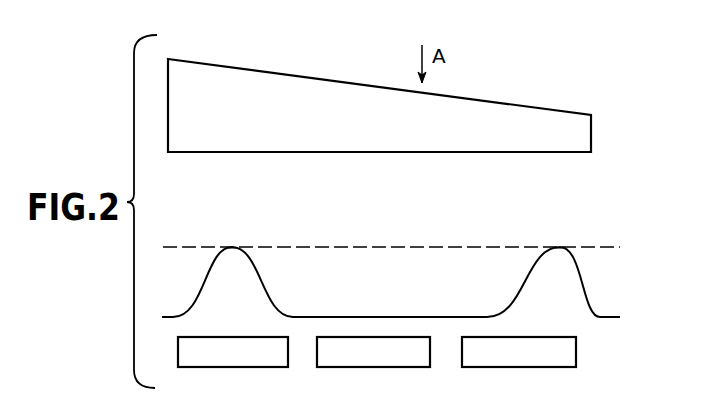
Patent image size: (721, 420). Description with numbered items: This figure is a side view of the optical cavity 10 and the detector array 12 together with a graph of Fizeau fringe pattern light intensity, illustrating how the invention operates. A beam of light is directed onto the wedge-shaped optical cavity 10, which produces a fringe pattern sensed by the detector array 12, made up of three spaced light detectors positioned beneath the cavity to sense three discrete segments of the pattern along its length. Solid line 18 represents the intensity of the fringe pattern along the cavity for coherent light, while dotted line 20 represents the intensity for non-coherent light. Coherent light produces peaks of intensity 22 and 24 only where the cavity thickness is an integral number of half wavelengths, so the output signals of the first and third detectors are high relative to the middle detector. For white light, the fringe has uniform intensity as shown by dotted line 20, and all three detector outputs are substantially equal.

The optical cavity 10 is at (580, 115).
The detector array 12 is at (176, 345).
The solid line 18 is at (597, 305).
The dotted line 20 is at (585, 246).
The peak of intensity 22 is at (557, 242).
The peak of intensity 24 is at (236, 244).